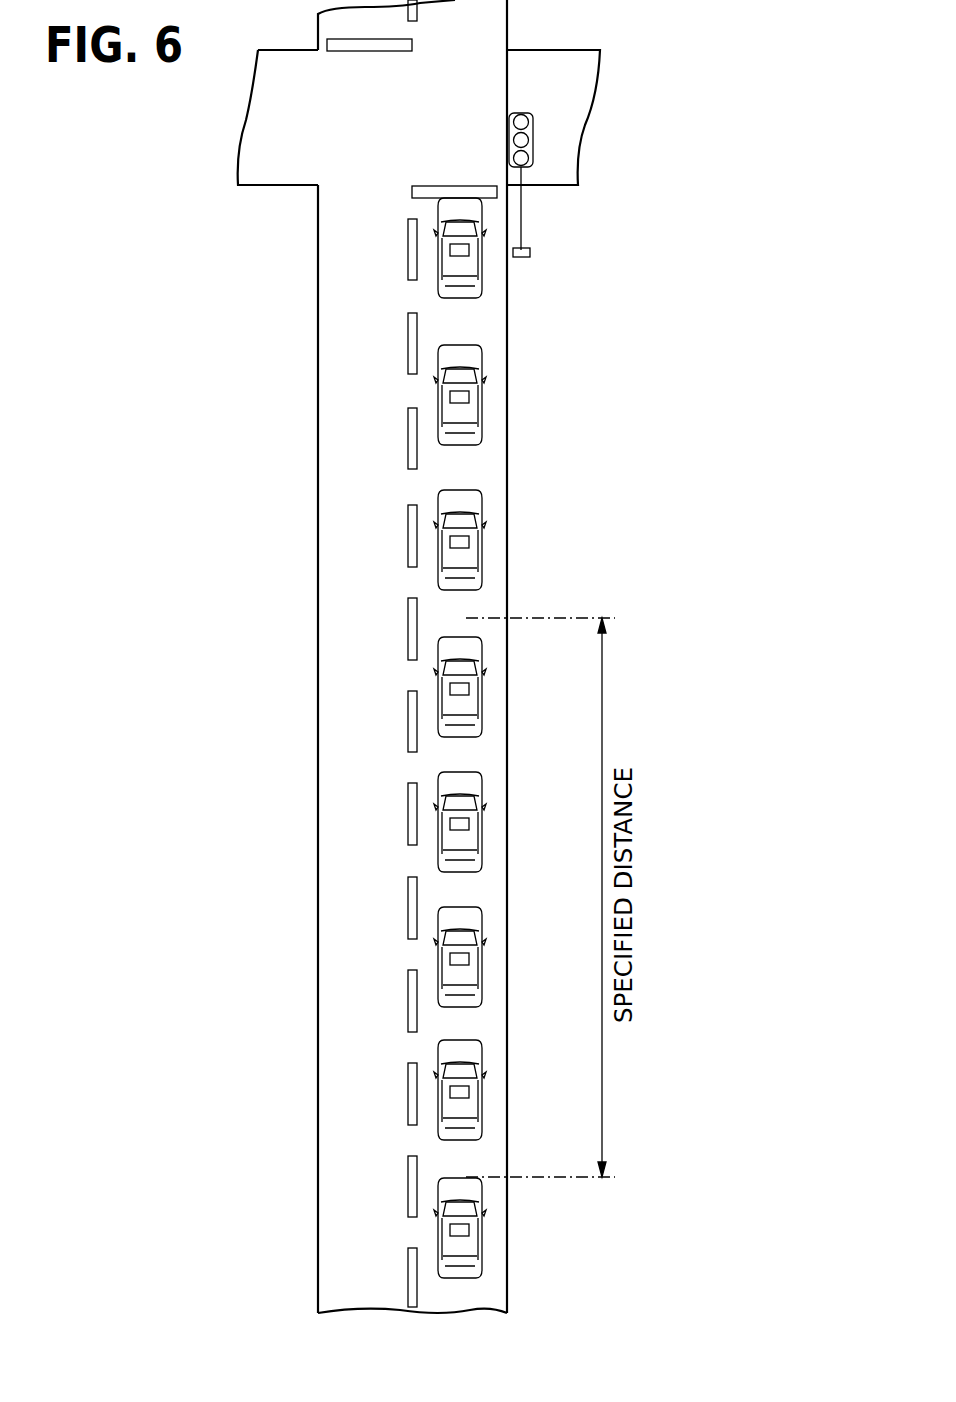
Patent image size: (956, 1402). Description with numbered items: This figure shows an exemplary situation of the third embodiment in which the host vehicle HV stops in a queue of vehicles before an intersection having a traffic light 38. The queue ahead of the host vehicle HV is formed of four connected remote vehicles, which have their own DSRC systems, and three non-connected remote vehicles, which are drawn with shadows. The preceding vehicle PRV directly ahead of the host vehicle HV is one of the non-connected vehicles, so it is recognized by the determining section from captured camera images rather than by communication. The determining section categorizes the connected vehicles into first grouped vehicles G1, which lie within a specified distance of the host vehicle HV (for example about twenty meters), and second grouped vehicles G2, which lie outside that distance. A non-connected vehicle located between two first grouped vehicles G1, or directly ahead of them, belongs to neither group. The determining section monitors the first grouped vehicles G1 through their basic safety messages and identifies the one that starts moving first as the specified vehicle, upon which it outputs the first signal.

The traffic light 38 is at (533, 134).
The preceding vehicle PRV is at (458, 1099).
The host vehicle HV is at (460, 1236).
The first grouped vehicles G1 is at (304, 822).
The second grouped vehicles G2 is at (327, 321).